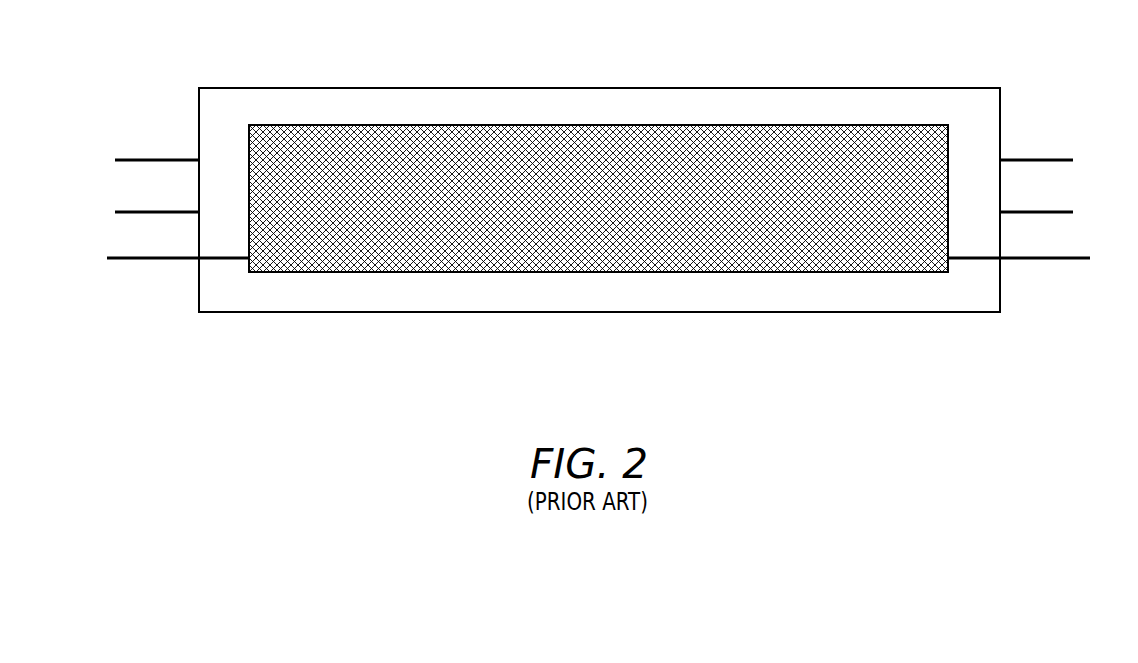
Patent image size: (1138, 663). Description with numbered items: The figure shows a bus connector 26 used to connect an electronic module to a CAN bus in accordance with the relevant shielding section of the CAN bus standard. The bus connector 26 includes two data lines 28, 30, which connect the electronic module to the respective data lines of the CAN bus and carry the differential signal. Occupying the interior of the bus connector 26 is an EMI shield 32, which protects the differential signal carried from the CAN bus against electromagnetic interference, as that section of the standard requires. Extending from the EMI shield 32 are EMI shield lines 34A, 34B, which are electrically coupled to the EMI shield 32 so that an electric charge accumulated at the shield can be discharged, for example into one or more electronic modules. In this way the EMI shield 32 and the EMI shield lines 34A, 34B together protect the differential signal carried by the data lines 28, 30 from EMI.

The bus connector 26 is at (734, 117).
The data line 28 is at (148, 158).
The data line 30 is at (137, 210).
The EMI shield 32 is at (540, 272).
The EMI shield line 34A is at (145, 262).
The EMI shield line 34B is at (1045, 260).